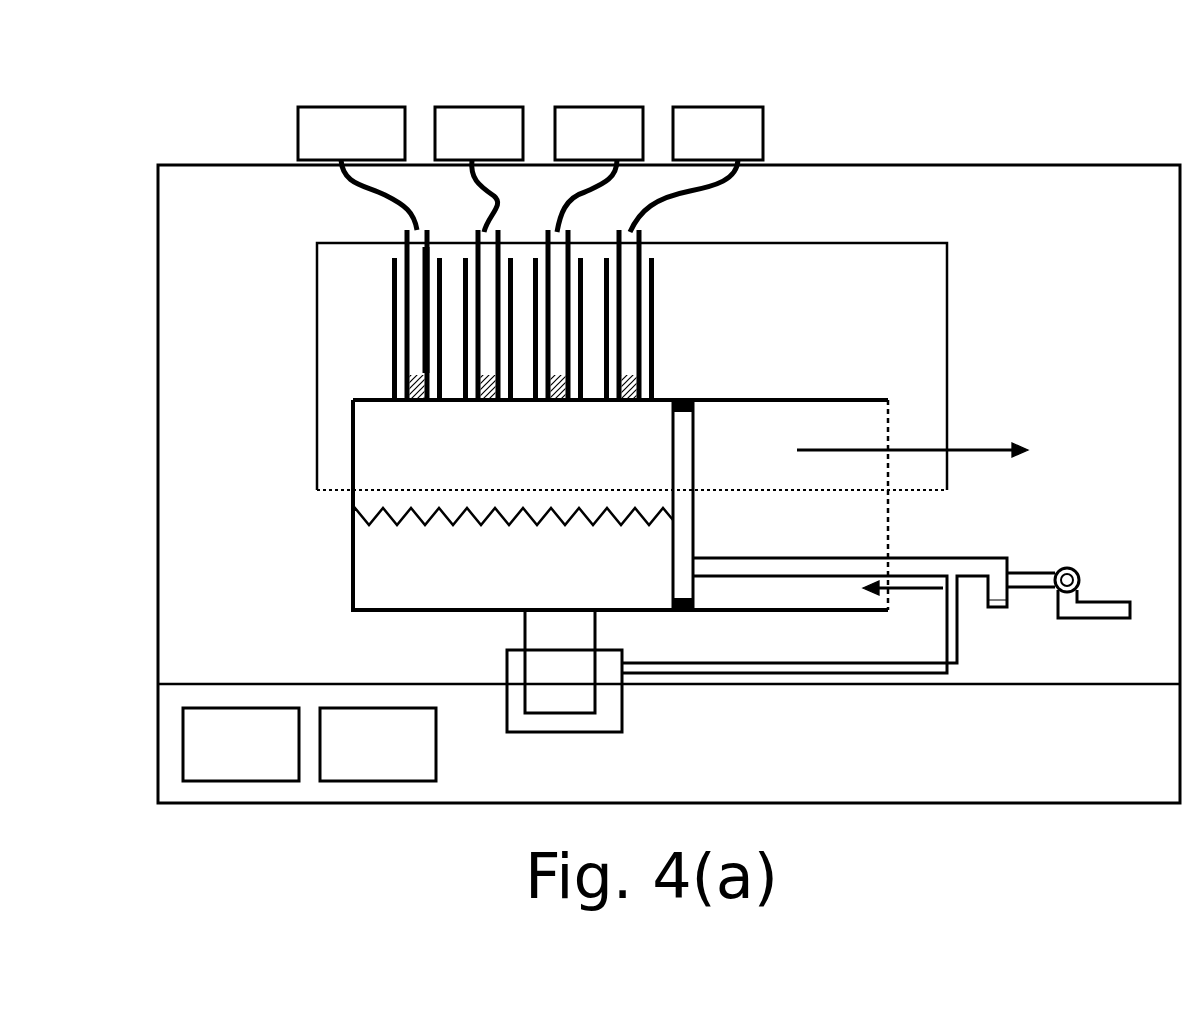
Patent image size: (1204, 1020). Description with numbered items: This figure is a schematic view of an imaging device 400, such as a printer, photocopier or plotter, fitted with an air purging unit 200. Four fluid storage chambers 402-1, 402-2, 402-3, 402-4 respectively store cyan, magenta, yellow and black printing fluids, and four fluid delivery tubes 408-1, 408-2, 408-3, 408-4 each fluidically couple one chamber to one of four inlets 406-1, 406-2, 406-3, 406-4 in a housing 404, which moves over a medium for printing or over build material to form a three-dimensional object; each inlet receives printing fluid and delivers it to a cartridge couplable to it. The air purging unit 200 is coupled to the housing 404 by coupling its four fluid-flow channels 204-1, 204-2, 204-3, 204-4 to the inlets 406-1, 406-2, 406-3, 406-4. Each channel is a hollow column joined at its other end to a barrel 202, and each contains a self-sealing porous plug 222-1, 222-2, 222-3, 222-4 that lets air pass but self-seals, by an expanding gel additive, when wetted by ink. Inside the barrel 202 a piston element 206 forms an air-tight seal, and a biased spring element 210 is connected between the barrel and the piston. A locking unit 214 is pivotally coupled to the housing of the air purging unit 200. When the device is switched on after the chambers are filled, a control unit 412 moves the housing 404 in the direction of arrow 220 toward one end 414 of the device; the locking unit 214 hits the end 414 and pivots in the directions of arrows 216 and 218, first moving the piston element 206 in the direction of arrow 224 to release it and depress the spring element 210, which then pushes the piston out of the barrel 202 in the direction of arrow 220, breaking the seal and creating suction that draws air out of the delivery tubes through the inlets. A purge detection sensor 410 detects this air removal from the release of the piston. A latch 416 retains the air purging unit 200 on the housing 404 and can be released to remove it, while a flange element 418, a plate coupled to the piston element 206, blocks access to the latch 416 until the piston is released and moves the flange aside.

The imaging device 400 is at (970, 126).
The fluid storage chamber 402-1 is at (351, 133).
The fluid storage chamber 402-2 is at (479, 133).
The fluid storage chamber 402-3 is at (599, 133).
The fluid storage chamber 402-4 is at (718, 133).
The housing 404 is at (316, 325).
The inlet 406-1 is at (418, 250).
The inlet 406-2 is at (490, 255).
The inlet 406-3 is at (557, 255).
The inlet 406-4 is at (633, 252).
The fluid delivery tube 408-1 is at (373, 194).
The fluid delivery tube 408-2 is at (493, 207).
The fluid delivery tube 408-3 is at (610, 188).
The fluid delivery tube 408-4 is at (730, 183).
The fluid-flow channel 204-1 is at (393, 310).
The fluid-flow channel 204-2 is at (463, 330).
The fluid-flow channel 204-3 is at (582, 348).
The fluid-flow channel 204-4 is at (653, 365).
The self-sealing porous plug 222-1 is at (412, 388).
The self-sealing porous plug 222-2 is at (489, 388).
The self-sealing porous plug 222-3 is at (556, 388).
The self-sealing porous plug 222-4 is at (630, 388).
The air purging unit 200 is at (352, 555).
The barrel 202 is at (785, 399).
The piston element 206 is at (730, 546).
The spring element 210 is at (532, 520).
The arrow 220 is at (917, 448).
The end 414 is at (1176, 503).
The arrow 218 is at (1028, 598).
The arrow 216 is at (1090, 628).
The locking unit 214 is at (1047, 618).
The arrow 224 is at (922, 592).
The latch 416 is at (525, 630).
The flange element 418 is at (622, 690).
The control unit 412 is at (241, 744).
The purge detection sensor 410 is at (378, 744).